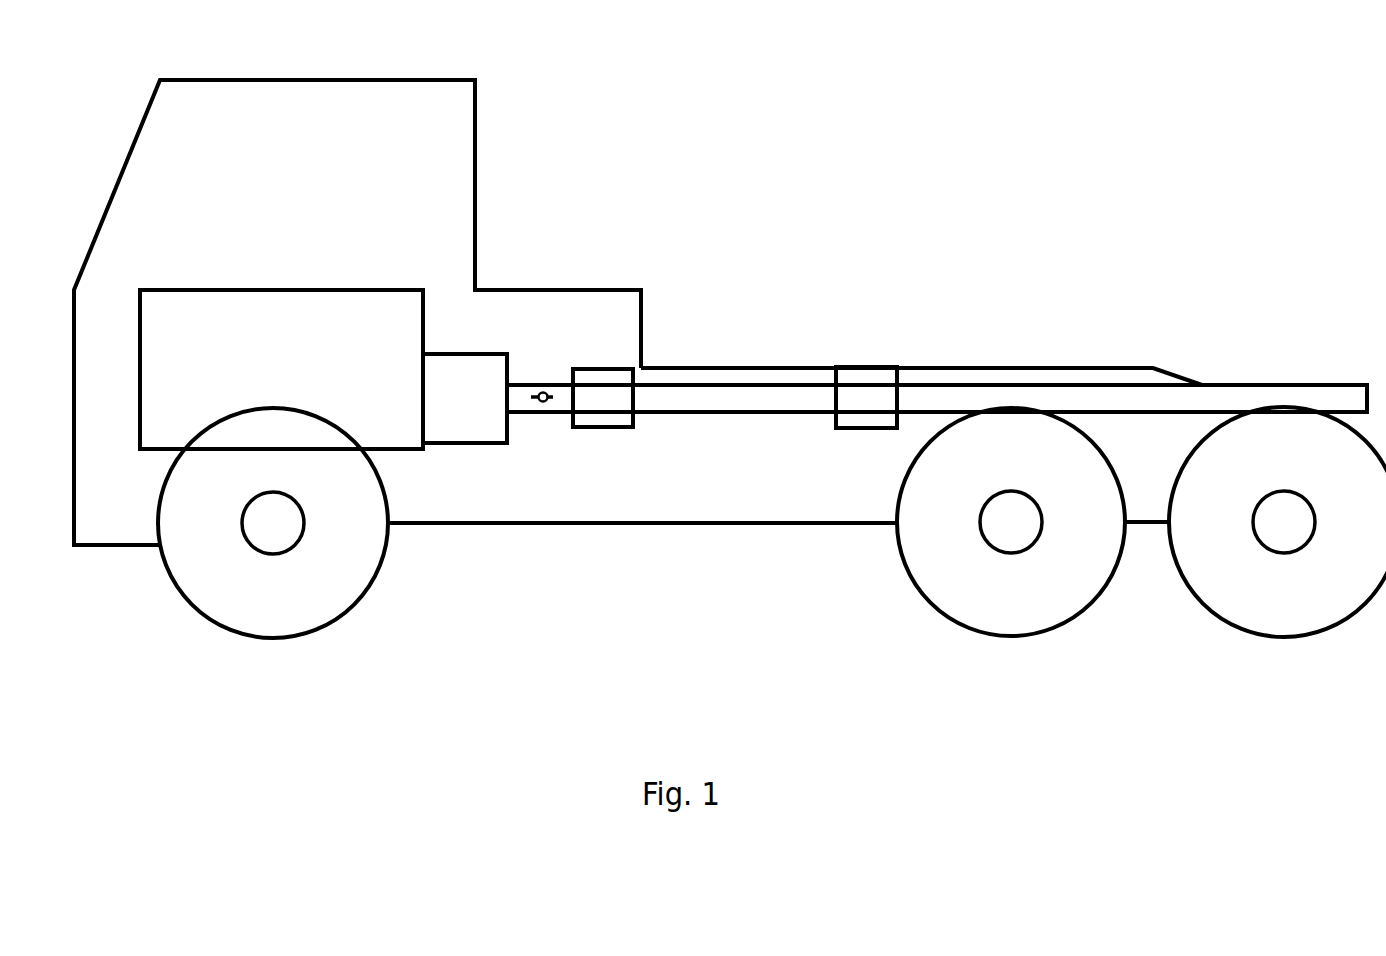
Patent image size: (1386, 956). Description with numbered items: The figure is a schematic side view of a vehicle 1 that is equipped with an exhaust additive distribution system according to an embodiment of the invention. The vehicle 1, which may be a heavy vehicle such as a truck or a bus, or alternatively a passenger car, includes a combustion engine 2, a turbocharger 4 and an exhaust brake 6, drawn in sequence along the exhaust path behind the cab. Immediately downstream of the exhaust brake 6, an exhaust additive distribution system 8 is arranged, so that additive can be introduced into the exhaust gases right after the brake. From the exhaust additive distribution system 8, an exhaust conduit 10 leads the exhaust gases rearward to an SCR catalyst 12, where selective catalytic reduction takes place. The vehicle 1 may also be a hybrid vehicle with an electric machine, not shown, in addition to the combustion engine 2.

The vehicle 1 is at (730, 347).
The combustion engine 2 is at (288, 380).
The turbocharger 4 is at (473, 410).
The exhaust brake 6 is at (553, 400).
The exhaust additive distribution system 8 is at (611, 410).
The exhaust conduit 10 is at (720, 392).
The SCR catalyst 12 is at (879, 410).